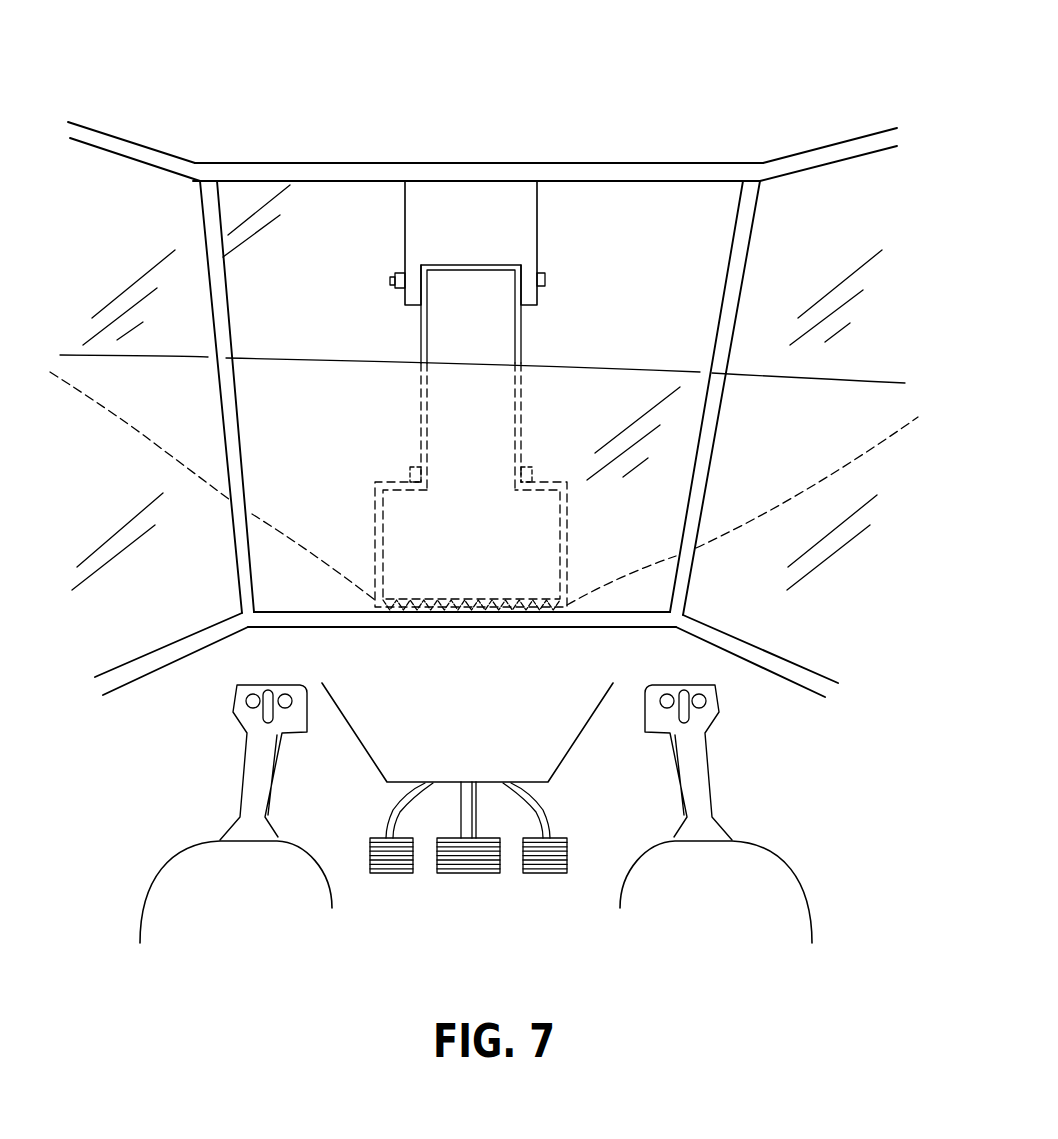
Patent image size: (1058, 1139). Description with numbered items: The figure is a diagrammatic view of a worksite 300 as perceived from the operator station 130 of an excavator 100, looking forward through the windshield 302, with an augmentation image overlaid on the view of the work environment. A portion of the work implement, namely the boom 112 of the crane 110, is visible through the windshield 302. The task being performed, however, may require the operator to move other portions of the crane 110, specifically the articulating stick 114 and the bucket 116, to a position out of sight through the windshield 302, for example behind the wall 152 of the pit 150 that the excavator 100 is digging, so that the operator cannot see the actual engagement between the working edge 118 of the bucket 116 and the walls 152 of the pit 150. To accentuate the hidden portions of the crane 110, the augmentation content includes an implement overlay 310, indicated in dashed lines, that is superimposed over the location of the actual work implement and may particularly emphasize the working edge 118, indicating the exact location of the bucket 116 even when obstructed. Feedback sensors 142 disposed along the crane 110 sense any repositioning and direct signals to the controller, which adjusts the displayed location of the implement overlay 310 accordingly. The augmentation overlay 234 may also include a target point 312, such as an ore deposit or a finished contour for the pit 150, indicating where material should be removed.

The excavator 100 is at (132, 140).
The crane 110 is at (474, 395).
The boom 112 is at (537, 230).
The articulating stick 114 is at (521, 337).
The bucket 116 is at (565, 560).
The working edge 118 is at (607, 592).
The operator station 130 is at (177, 749).
The feedback sensors 142 is at (395, 283).
The pit 150 is at (580, 352).
The wall 152 is at (630, 367).
The augmentation overlay 234 is at (309, 395).
The worksite 300 is at (277, 344).
The windshield 302 is at (714, 225).
The implement overlay 310 is at (418, 423).
The target point 312 is at (152, 440).